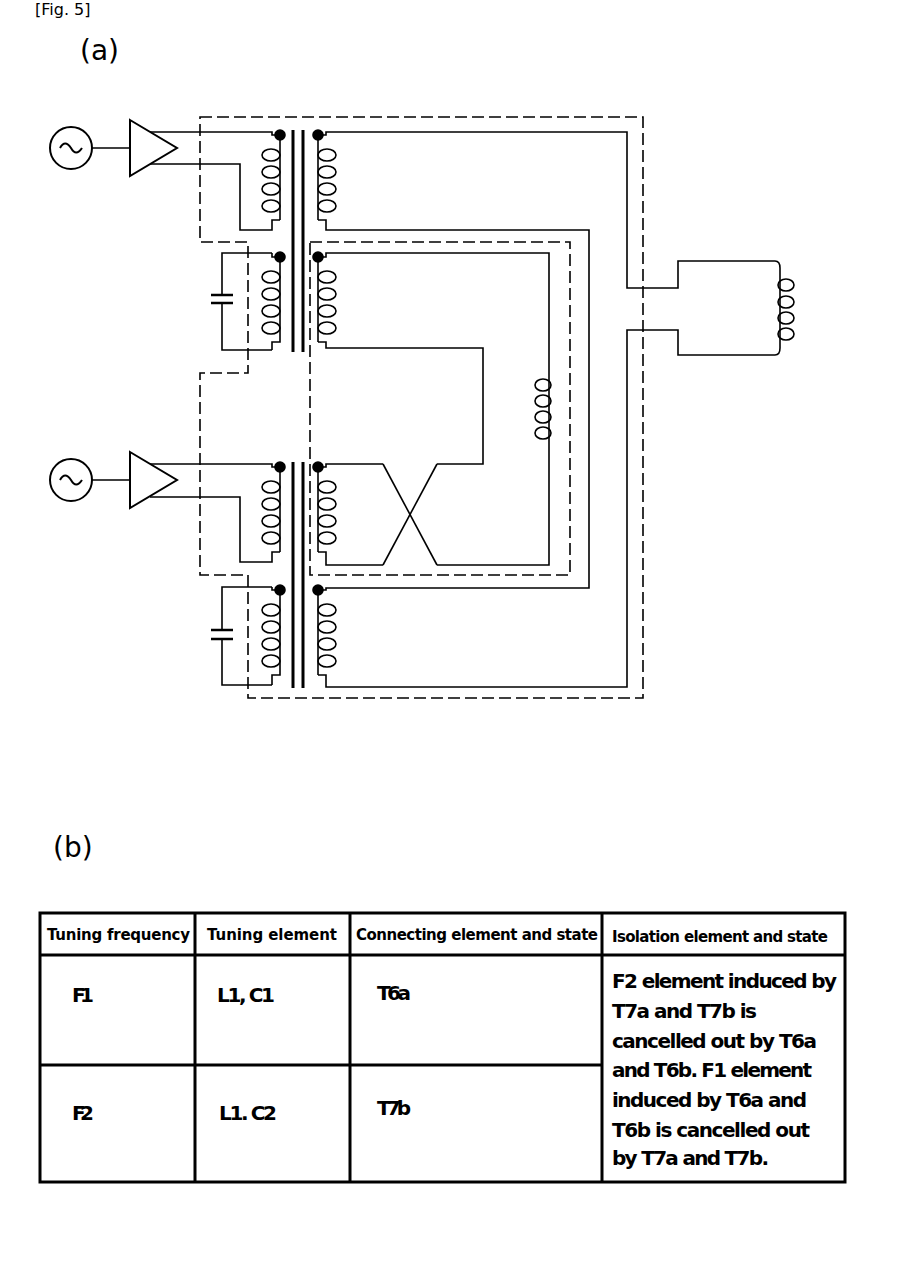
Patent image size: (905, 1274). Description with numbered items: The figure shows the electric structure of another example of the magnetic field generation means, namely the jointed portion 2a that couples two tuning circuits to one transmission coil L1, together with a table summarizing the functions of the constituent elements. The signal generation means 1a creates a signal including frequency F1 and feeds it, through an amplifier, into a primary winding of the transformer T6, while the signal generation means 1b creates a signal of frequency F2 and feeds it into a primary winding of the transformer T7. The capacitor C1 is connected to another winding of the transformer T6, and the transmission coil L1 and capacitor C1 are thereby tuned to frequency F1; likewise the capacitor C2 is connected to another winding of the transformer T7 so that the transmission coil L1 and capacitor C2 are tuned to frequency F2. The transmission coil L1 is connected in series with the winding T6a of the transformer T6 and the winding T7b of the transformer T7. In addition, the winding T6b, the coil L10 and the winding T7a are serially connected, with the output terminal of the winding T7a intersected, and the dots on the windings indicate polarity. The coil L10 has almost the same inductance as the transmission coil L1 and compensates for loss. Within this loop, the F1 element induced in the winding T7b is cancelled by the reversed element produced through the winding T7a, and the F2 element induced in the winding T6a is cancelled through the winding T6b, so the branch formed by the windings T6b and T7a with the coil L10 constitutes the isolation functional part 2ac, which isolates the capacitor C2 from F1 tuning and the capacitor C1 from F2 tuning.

The signal generation means 1a is at (108, 150).
The signal generation means 1b is at (108, 483).
The jointed portion 2a is at (528, 117).
The isolation functional part 2ac is at (452, 242).
The capacitor C1 is at (227, 301).
The capacitor C2 is at (227, 636).
The transformer T6 is at (290, 352).
The transformer T7 is at (291, 462).
The winding of transformer T6 T6a is at (348, 175).
The winding of transformer T6 T6b is at (348, 297).
The winding of transformer T7 T7a is at (348, 507).
The winding of transformer T7 T7b is at (348, 630).
The coil L10 is at (524, 411).
The transmission coil L1 is at (720, 357).